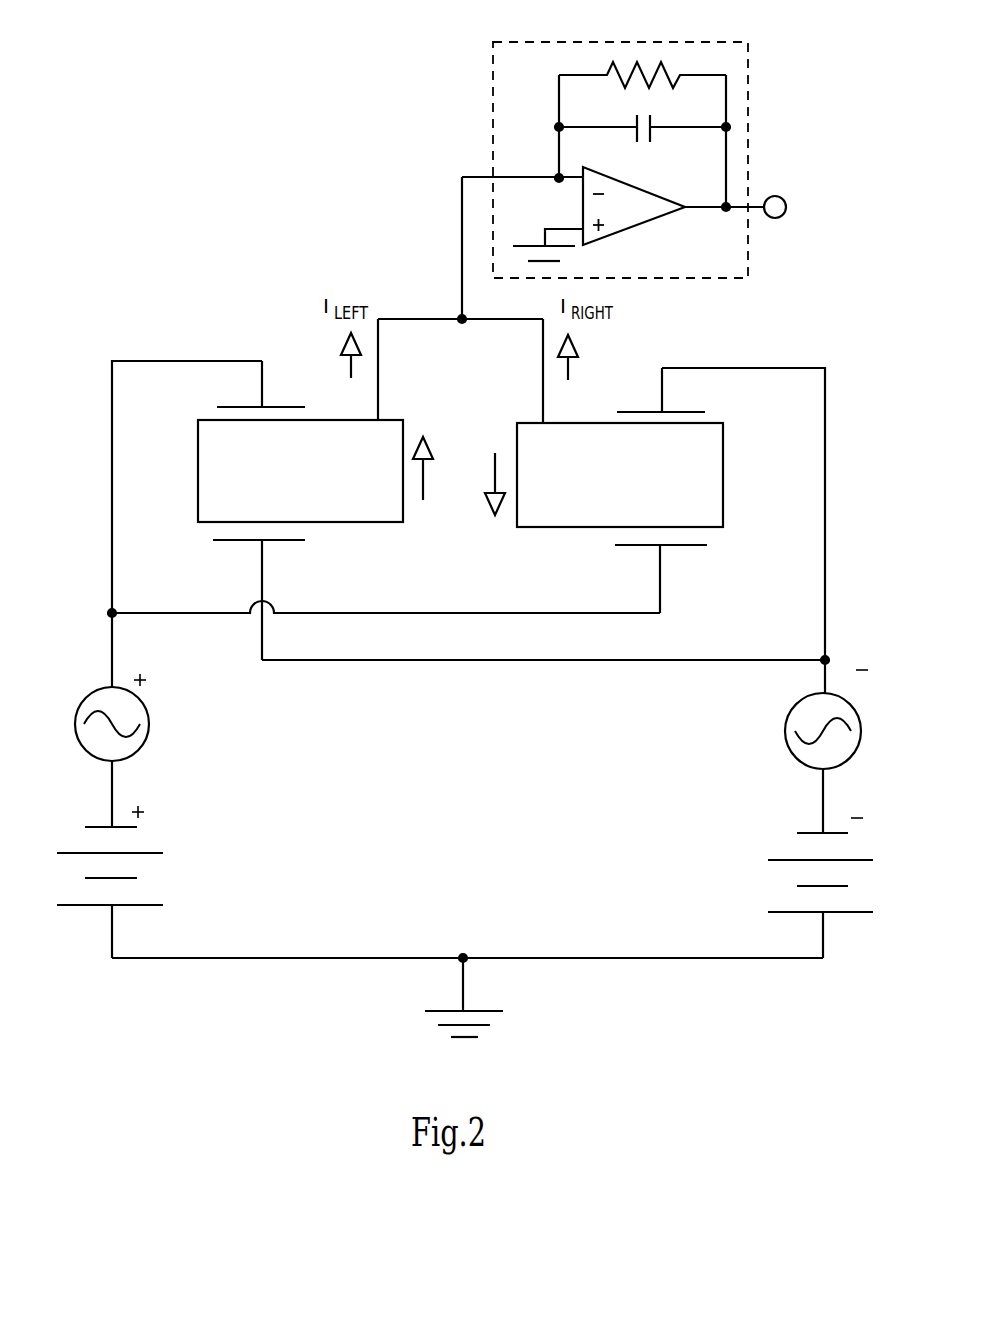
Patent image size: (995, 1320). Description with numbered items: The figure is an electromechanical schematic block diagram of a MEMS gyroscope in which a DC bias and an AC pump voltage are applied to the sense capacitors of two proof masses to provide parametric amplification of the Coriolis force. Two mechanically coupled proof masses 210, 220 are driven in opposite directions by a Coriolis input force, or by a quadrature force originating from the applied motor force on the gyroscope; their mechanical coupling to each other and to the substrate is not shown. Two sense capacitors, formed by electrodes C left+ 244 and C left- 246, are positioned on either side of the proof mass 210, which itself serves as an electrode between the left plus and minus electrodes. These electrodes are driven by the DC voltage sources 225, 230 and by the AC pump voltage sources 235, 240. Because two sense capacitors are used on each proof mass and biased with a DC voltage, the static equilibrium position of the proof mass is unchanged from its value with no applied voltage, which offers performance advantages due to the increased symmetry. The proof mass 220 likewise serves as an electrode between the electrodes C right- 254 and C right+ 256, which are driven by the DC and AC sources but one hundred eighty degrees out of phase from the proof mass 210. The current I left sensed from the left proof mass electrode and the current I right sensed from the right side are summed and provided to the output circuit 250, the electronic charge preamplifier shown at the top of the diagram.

The proof mass 210 is at (197, 471).
The proof mass 220 is at (724, 477).
The DC voltage source 225 is at (68, 840).
The DC voltage source 230 is at (862, 848).
The AC pump voltage source 235 is at (77, 705).
The AC pump voltage source 240 is at (860, 711).
The C left+ electrode 244 is at (282, 405).
The C left- electrode 246 is at (286, 543).
The output circuit 250 is at (619, 42).
The C right- electrode 254 is at (680, 410).
The C right+ electrode 256 is at (686, 548).